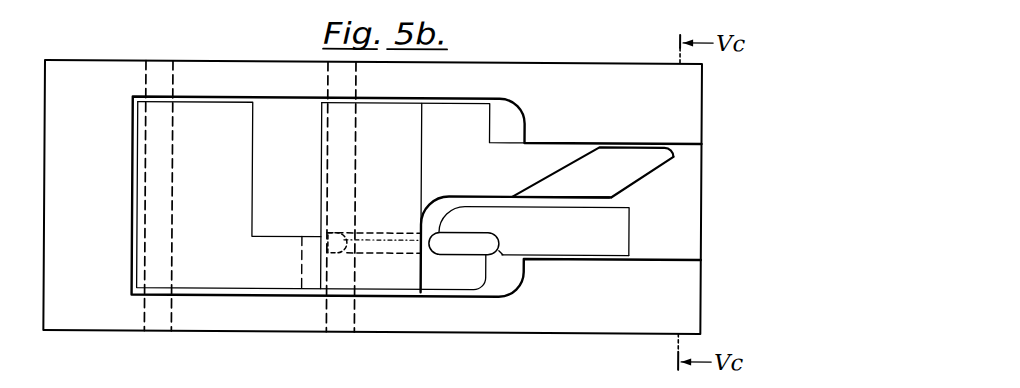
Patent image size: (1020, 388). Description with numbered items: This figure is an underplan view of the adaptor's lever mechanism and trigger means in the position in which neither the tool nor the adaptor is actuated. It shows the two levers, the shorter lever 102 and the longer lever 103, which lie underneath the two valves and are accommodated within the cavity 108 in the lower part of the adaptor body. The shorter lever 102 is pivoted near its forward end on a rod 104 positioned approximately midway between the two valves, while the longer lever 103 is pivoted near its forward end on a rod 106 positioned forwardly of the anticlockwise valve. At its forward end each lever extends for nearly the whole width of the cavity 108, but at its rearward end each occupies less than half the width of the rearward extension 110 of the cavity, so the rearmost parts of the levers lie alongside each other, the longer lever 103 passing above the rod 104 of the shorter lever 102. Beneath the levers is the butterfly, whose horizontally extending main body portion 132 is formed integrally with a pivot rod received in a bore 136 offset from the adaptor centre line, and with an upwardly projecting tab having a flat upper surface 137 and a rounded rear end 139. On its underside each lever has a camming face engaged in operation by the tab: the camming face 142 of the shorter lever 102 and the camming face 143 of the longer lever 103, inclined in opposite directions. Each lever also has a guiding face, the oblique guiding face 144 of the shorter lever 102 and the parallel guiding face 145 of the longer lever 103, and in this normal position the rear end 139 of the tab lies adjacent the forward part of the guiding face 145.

The shorter lever 102 is at (404, 121).
The longer lever 103 is at (207, 106).
The rod 104 is at (347, 80).
The rod 106 is at (157, 69).
The cavity 108 is at (275, 114).
The rearward extension 110 is at (663, 239).
The main body portion 132 is at (388, 223).
The bore 136 is at (328, 238).
The flat upper surface 137 is at (471, 240).
The rear end 139 is at (504, 248).
The camming face 142 is at (612, 157).
The camming face 143 is at (587, 242).
The guiding face 144 is at (647, 174).
The guiding face 145 is at (551, 203).